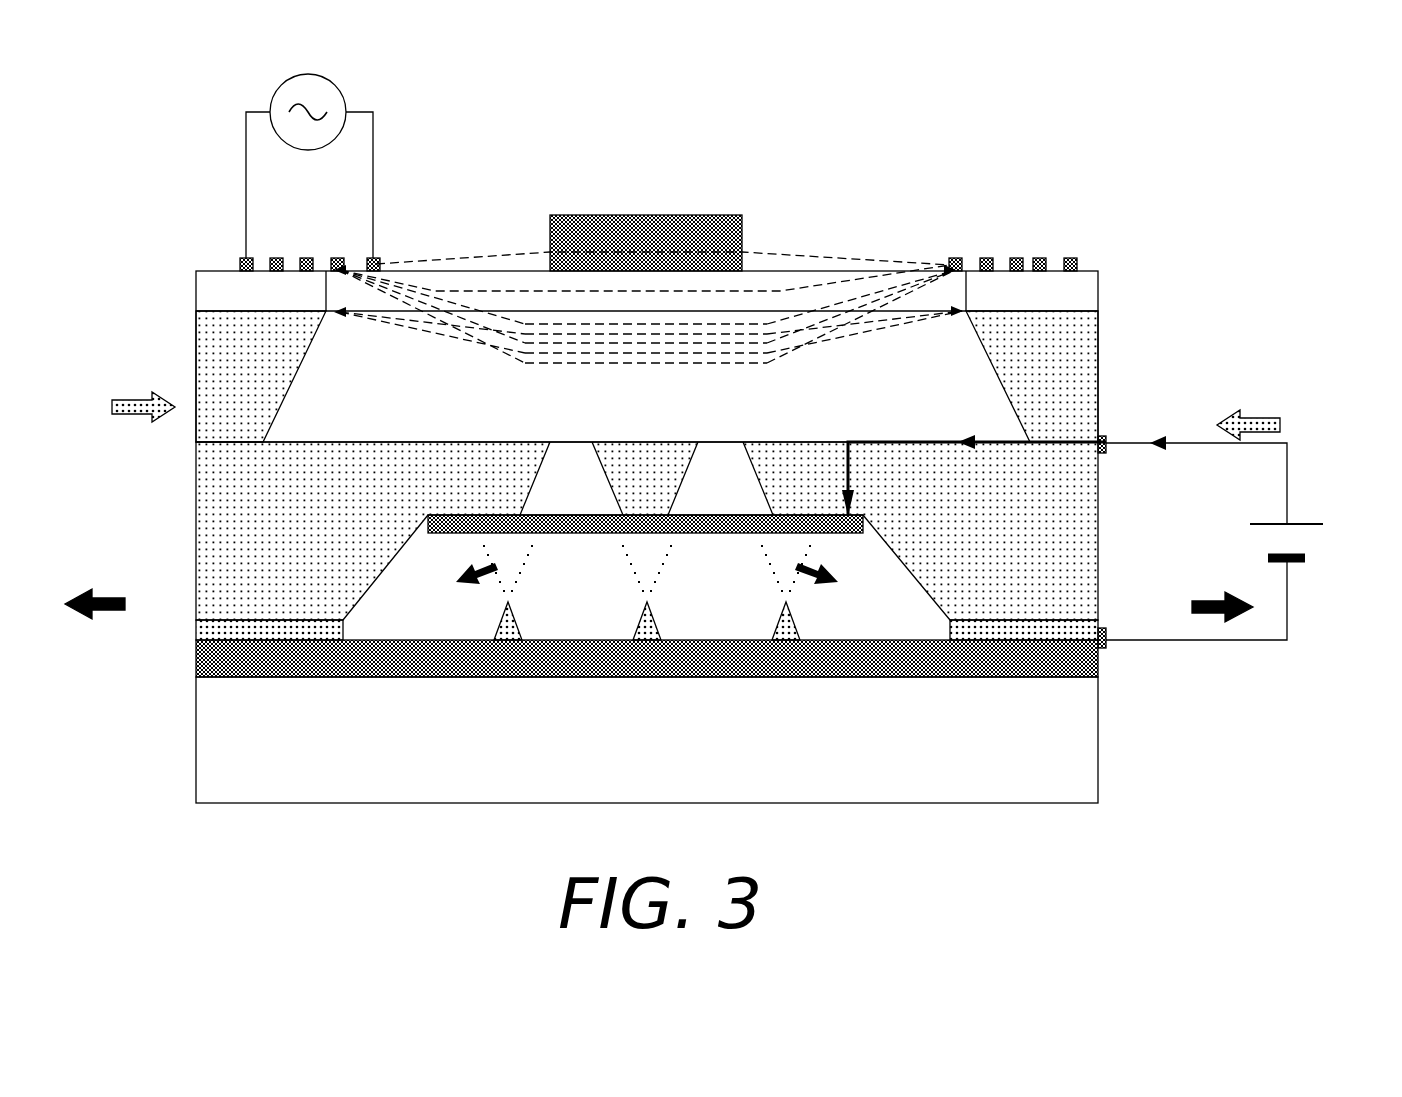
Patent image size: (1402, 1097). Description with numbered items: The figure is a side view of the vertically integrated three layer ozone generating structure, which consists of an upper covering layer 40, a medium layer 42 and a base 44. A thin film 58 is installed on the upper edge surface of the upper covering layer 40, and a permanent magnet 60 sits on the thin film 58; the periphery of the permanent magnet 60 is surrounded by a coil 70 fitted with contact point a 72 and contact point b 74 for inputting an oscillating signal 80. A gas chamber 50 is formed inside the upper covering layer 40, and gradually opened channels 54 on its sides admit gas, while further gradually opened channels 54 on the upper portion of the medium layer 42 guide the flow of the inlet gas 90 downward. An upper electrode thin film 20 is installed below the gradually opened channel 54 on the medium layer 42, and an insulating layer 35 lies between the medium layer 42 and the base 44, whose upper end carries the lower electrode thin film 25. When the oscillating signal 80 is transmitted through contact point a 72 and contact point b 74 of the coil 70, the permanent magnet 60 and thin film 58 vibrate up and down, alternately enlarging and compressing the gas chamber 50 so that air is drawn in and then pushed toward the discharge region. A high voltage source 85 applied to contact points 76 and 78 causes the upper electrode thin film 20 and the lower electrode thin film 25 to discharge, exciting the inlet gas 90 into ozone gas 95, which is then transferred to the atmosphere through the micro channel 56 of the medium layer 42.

The upper electrode thin film 20 is at (460, 515).
The lower electrode thin film 25 is at (207, 661).
The insulating layer 35 is at (208, 627).
The upper covering layer 40 is at (1088, 330).
The medium layer 42 is at (210, 537).
The base 44 is at (1075, 775).
The gas chamber 50 is at (327, 357).
The gradually opened channel 54 is at (222, 413).
The micro channel 56 is at (1087, 603).
The thin film 58 is at (875, 285).
The permanent magnet 60 is at (743, 232).
The coil 70 is at (276, 258).
The contact point a 72 is at (242, 258).
The contact point b 74 is at (377, 257).
The contact point 76 is at (1107, 437).
The contact point 78 is at (1106, 648).
The oscillating signal 80 is at (290, 82).
The high voltage source 85 is at (1292, 523).
The inlet gas 90 is at (696, 416).
The ozone gas 95 is at (659, 607).